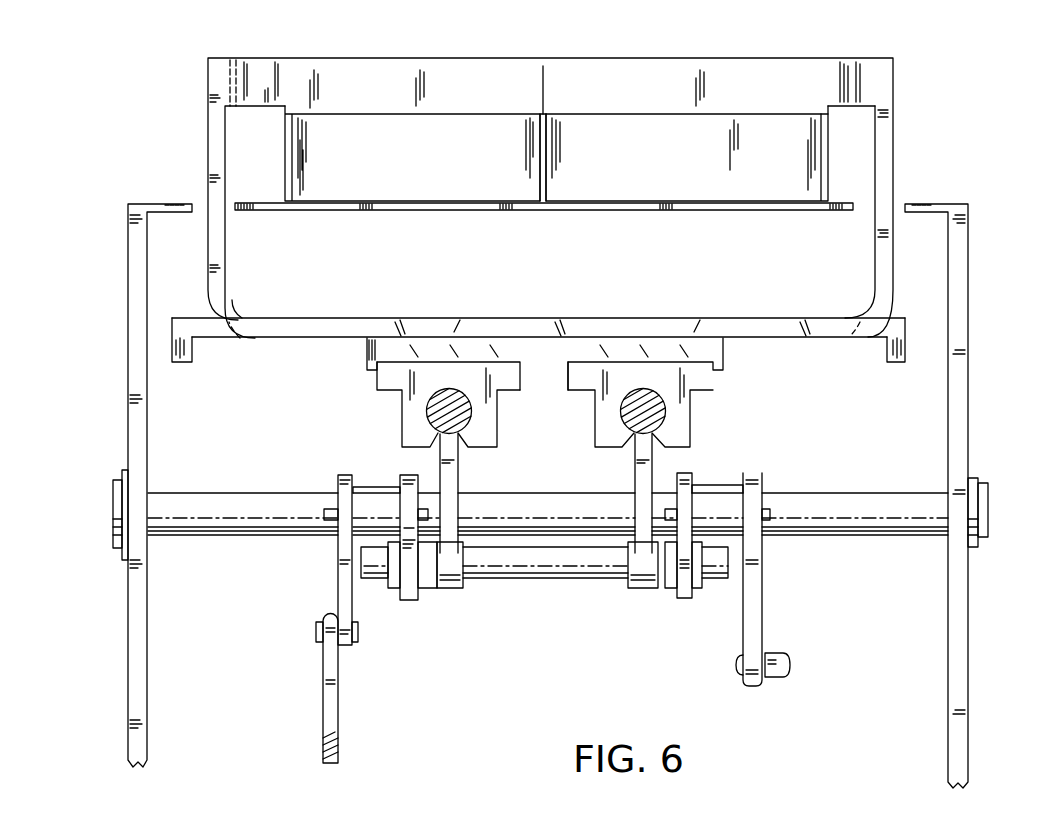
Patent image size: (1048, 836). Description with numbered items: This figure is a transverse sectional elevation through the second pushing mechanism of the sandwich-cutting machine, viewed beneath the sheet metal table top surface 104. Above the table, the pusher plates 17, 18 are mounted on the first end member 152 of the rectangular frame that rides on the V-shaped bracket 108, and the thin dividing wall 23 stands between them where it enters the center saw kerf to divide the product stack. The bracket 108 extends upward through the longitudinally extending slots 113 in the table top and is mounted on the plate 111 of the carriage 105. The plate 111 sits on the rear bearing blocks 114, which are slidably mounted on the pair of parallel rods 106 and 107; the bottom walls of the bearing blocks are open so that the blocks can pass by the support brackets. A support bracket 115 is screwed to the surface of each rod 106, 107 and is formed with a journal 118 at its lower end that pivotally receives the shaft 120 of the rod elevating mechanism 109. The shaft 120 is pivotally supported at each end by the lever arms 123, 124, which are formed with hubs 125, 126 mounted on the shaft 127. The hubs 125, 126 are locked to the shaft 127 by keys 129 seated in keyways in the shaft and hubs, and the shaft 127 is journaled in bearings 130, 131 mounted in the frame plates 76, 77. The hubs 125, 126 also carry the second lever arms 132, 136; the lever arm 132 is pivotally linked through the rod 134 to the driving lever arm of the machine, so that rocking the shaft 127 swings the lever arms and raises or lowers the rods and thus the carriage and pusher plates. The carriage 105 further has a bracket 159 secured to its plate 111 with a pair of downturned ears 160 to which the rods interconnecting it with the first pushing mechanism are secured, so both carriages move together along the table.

The pusher plate 17 is at (678, 172).
The pusher plate 18 is at (448, 172).
The dividing wall 23 is at (541, 113).
The frame plate 76 is at (140, 357).
The frame plate 77 is at (960, 311).
The table top surface 104 is at (433, 211).
The carriage 105 is at (733, 358).
The rod 106 is at (452, 410).
The rod 107 is at (646, 413).
The V-shaped bracket 108 is at (220, 313).
The rod elevating mechanism 109 is at (529, 590).
The plate 111 is at (366, 352).
The slots 113 is at (203, 210).
The rear bearing blocks 114 is at (412, 397).
The support bracket 115 is at (459, 468).
The journal 118 is at (441, 589).
The shaft 120 is at (585, 579).
The lever arm 123 is at (410, 530).
The lever arm 124 is at (684, 545).
The hub 125 is at (370, 495).
The hub 126 is at (715, 497).
The shaft 127 is at (222, 508).
The keys 129 is at (327, 513).
The bearing 130 is at (113, 502).
The bearing 131 is at (988, 512).
The second lever arm 132 is at (340, 598).
The rod 134 is at (335, 705).
The second lever arm 136 is at (755, 640).
The first end member 152 is at (258, 76).
The bracket 159 is at (643, 326).
The downturned ears 160 is at (190, 363).